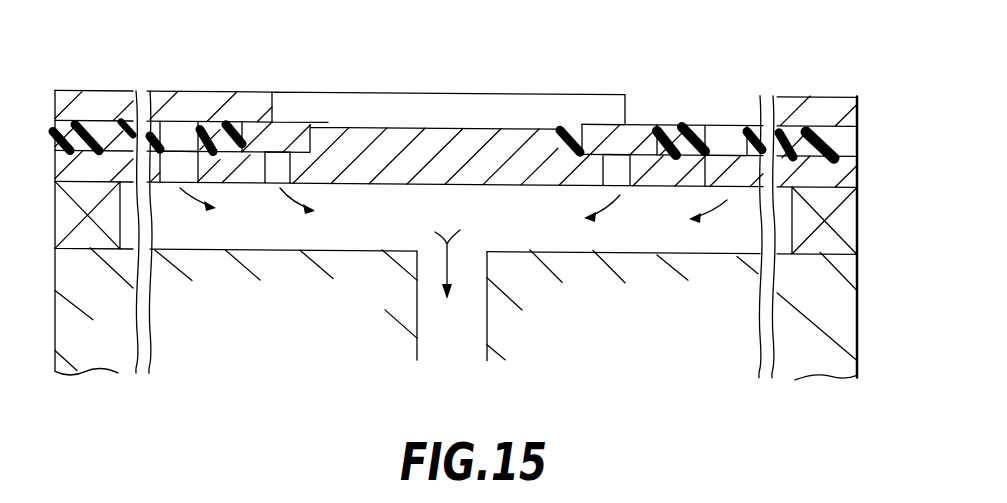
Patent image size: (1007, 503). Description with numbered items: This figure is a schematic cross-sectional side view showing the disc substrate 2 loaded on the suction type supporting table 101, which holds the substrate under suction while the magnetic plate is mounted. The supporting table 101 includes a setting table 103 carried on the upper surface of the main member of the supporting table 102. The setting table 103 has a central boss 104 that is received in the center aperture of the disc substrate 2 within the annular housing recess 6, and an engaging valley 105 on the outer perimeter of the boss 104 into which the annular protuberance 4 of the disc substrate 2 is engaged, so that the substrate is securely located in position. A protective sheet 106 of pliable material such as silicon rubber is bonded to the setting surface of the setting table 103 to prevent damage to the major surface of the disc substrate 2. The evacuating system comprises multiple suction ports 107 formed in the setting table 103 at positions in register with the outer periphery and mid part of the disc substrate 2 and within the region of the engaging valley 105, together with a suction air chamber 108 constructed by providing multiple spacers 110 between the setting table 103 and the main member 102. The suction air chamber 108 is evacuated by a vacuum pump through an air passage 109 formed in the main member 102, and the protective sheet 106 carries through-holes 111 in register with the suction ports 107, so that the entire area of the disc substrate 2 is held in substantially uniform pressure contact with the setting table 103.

The disc substrate 2 is at (83, 91).
The annular protuberance 4 is at (590, 145).
The annular housing recess 6 is at (622, 110).
The suction type supporting table 101 is at (857, 356).
The main member of the supporting table 102 is at (837, 303).
The setting table 103 is at (840, 177).
The central boss 104 is at (500, 137).
The engaging valley 105 is at (657, 133).
The protective sheet 106 is at (830, 123).
The suction ports 107 is at (160, 132).
The suction air chamber 108 is at (222, 227).
The air passage 109 is at (482, 308).
The spacers 110 is at (840, 223).
The through-holes 111 is at (192, 130).